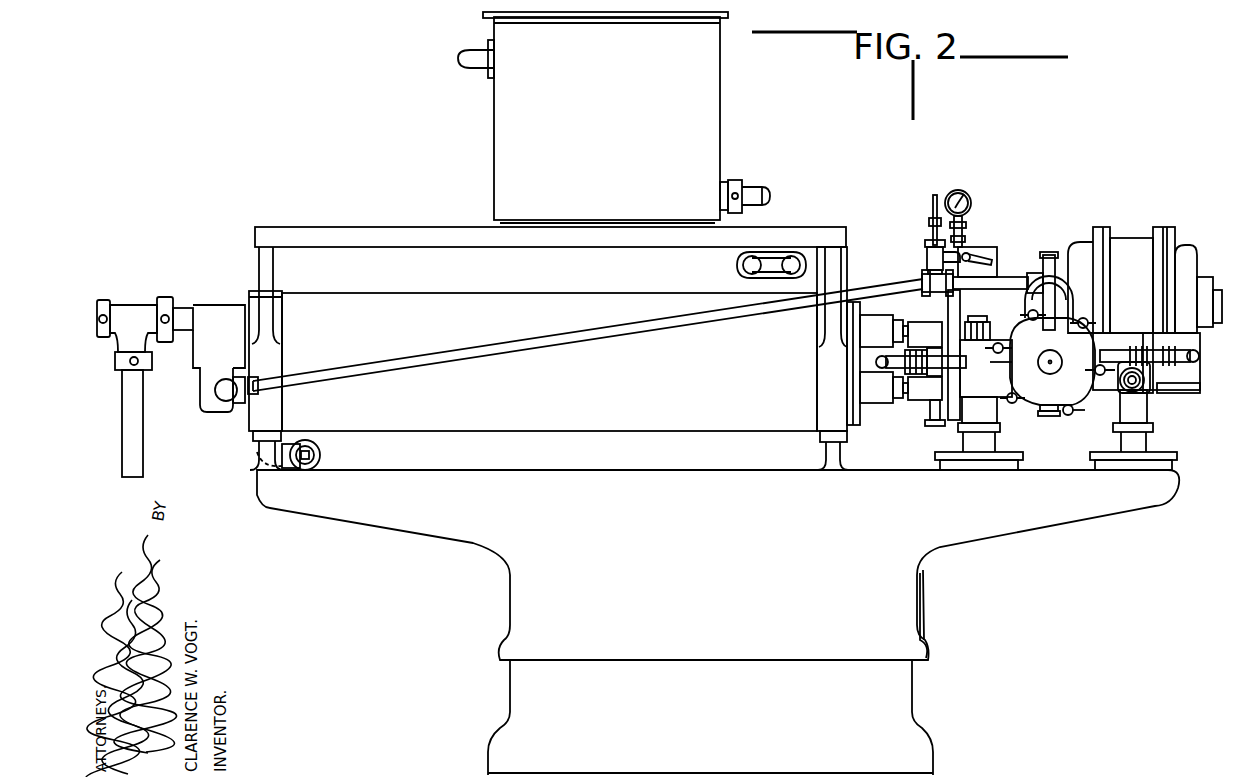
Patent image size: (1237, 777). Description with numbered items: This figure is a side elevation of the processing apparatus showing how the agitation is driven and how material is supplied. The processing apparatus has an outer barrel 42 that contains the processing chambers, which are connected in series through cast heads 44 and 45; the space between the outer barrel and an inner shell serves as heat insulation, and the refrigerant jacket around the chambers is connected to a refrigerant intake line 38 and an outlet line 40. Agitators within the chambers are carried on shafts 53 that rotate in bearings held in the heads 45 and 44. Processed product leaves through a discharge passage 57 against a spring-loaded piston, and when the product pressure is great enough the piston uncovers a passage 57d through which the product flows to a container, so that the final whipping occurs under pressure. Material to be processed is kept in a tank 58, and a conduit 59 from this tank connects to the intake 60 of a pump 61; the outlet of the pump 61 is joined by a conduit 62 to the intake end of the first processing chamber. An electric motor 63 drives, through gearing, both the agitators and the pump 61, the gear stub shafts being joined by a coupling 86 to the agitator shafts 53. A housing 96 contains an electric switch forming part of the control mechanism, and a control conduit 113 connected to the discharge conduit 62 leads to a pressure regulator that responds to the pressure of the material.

The refrigerant intake line 38 is at (256, 452).
The refrigerant outlet line 40 is at (848, 265).
The outer barrel 42 is at (457, 294).
The cast head 44 is at (252, 300).
The cast head 45 is at (851, 420).
The agitator shaft 53 is at (905, 328).
The discharge passage 57 is at (183, 292).
The discharge passage 57d is at (144, 446).
The tank 58 is at (593, 117).
The conduit 59 is at (760, 190).
The pump intake 60 is at (1118, 390).
The pump 61 is at (1067, 361).
The conduit 62 is at (656, 334).
The electric motor 63 is at (1130, 246).
The coupling 86 is at (920, 330).
The housing 96 is at (975, 248).
The control conduit 113 is at (934, 200).